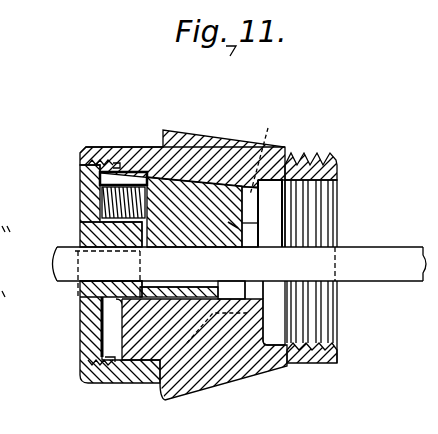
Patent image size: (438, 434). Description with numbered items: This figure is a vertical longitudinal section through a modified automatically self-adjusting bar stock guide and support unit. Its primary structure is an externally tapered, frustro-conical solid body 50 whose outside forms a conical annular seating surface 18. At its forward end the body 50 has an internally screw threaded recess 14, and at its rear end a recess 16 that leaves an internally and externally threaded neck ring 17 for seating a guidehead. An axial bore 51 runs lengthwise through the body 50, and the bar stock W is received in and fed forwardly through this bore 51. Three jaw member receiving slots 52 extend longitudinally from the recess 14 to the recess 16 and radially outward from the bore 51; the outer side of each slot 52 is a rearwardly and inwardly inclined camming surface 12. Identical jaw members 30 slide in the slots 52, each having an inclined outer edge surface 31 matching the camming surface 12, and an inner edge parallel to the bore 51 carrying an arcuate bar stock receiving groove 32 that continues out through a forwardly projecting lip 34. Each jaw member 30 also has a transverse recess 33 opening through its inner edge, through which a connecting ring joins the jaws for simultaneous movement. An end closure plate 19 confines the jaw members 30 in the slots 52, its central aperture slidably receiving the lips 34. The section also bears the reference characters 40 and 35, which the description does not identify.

The bar stock W is at (403, 265).
The tapering annular external seating surface 18 is at (208, 117).
The jaw member wedging or camming surface 12 is at (220, 158).
The internally screw threaded recess 14 is at (87, 167).
The solid body 50 is at (90, 157).
The forwardly projecting lip 34 is at (80, 240).
The bar stock receiving groove 32 is at (93, 292).
The threads 40 is at (113, 163).
The jaw members 30 is at (120, 175).
The end closure plate 19 is at (97, 203).
The transverse recess 33 is at (219, 217).
The lower ferrule 35 is at (158, 290).
The axial bore 51 is at (230, 288).
The recess 16 is at (275, 233).
The jaw member receiving slots 52 is at (283, 167).
The internally and externally threaded neck ring 17 is at (327, 357).
The inclined outer edge surface 31 is at (229, 235).